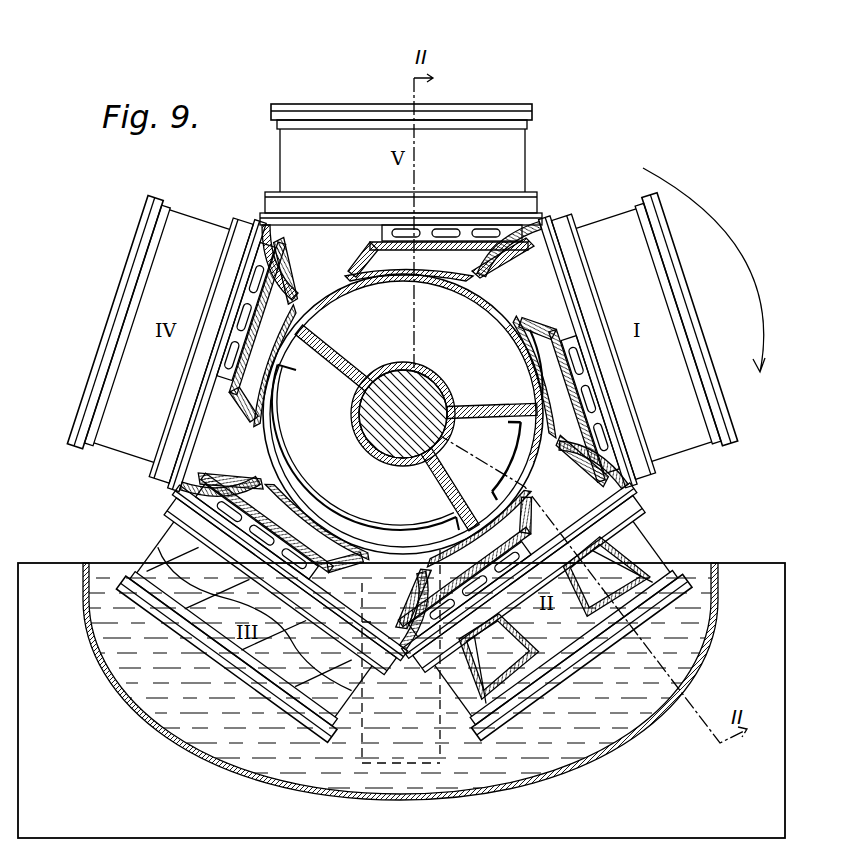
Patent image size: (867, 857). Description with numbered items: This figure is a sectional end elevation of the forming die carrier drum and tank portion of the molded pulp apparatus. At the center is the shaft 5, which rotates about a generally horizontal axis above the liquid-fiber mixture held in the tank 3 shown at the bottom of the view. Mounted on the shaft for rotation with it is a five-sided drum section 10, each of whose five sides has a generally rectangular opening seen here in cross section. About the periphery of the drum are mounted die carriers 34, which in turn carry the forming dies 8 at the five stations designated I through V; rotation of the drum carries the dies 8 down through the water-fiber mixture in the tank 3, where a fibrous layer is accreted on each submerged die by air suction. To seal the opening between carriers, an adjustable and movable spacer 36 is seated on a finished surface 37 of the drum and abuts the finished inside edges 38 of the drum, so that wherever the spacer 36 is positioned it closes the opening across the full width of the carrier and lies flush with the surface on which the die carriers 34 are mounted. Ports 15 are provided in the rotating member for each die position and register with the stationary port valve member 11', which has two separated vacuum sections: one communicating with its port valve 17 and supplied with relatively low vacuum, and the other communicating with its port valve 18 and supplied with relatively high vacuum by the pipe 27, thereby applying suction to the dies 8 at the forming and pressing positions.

The tank 3 is at (720, 570).
The shaft 5 is at (425, 383).
The forming dies 8 is at (157, 547).
The drum section 10 is at (438, 268).
The port valve member 11' is at (523, 340).
The ports 15 is at (326, 274).
The port valve 17 is at (512, 440).
The port valve 18 is at (288, 424).
The pipe 27 is at (452, 770).
The die carriers 34 is at (522, 150).
The spacer 36 is at (378, 232).
The finished surface 37 is at (515, 240).
The finished surface 38 is at (268, 222).